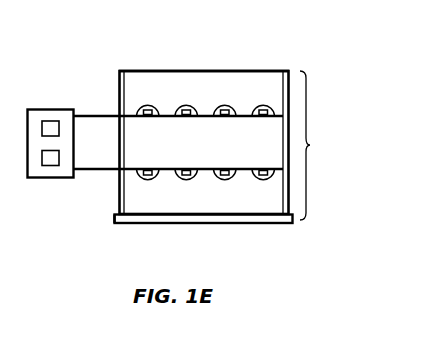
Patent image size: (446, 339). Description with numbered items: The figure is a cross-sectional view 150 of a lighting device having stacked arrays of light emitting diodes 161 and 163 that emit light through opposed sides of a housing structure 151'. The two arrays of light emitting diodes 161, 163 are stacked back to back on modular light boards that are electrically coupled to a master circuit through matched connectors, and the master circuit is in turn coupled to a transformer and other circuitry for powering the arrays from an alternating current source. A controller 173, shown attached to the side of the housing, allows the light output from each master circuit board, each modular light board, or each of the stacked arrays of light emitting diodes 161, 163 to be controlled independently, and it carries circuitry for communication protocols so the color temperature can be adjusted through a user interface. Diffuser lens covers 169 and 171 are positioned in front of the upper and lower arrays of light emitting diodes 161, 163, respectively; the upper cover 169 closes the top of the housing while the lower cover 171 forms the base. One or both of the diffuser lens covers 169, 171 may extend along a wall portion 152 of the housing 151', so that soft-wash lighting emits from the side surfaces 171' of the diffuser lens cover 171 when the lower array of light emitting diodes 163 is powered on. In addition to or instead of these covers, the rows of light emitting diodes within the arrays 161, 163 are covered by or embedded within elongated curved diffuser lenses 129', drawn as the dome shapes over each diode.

The cross-sectional view 150 is at (280, 44).
The diffuser lens cover 169 is at (207, 70).
The housing structure 151' is at (88, 141).
The wall portion 152 is at (288, 188).
The elongated curved diffuser lens 129' is at (178, 104).
The array of light emitting diodes 161 is at (204, 115).
The array of light emitting diodes 163 is at (207, 171).
The diffuser lens cover 171 is at (204, 243).
The side surfaces 171' is at (77, 239).
The controller 173 is at (50, 178).